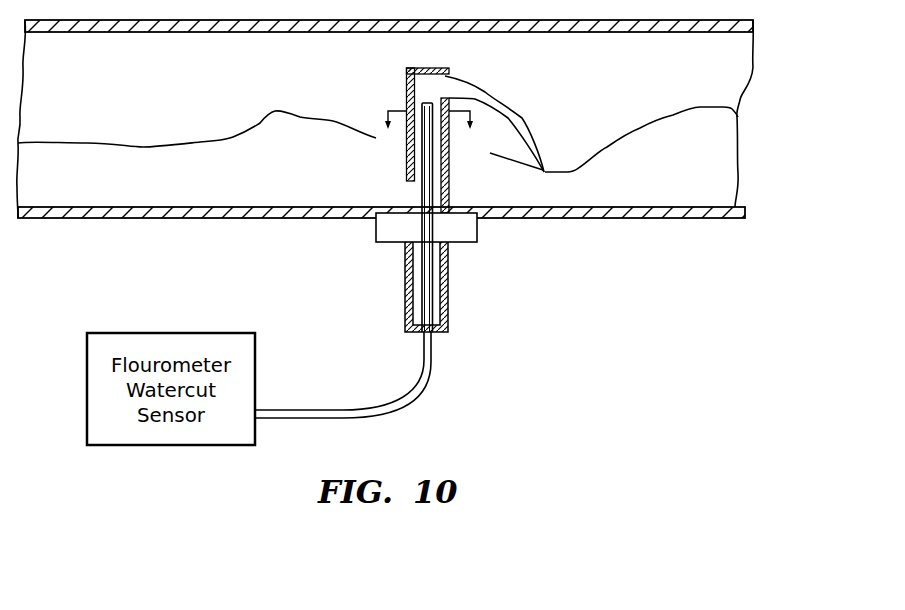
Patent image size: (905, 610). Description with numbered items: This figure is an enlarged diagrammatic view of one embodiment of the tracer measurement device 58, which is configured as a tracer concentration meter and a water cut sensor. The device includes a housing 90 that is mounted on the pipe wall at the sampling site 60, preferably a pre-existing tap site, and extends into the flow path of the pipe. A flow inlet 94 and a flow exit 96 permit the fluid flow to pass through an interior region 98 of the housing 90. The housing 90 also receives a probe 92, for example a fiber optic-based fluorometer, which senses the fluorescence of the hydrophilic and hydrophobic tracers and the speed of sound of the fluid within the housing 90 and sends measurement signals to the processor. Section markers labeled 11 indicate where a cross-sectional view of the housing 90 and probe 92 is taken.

The section line 11- 11 is at (437, 133).
The tracer measurement device 58 is at (490, 316).
The sampling site 60 is at (478, 218).
The housing 90 is at (448, 172).
The probe 92 is at (425, 190).
The flow inlet 94 is at (410, 181).
The flow exit 96 is at (443, 82).
The interior region 98 is at (407, 88).